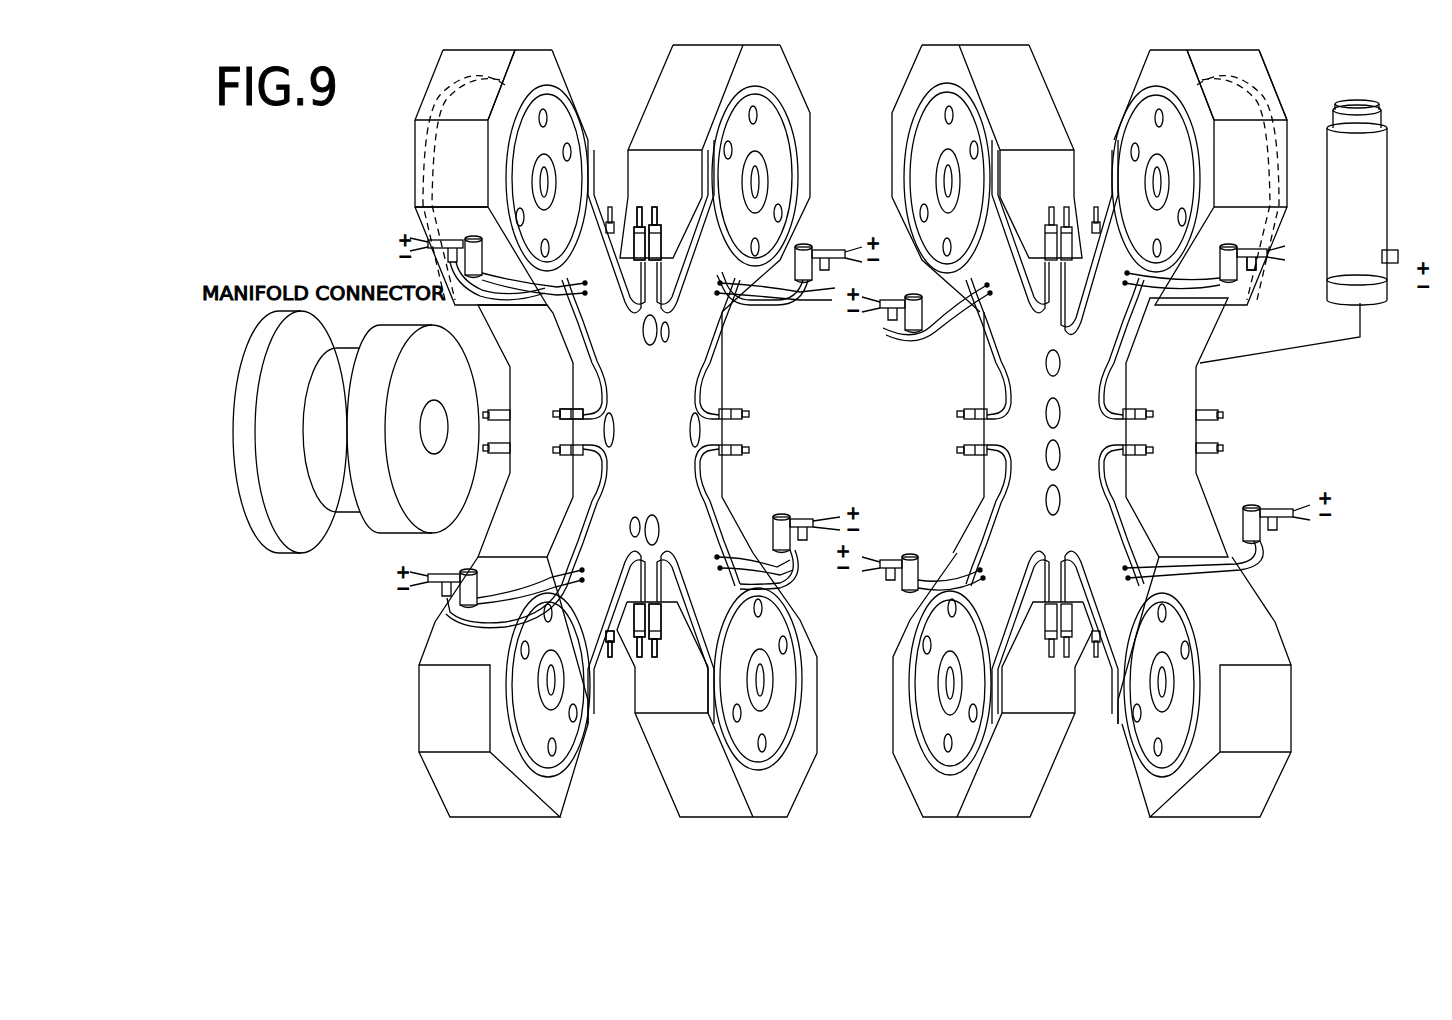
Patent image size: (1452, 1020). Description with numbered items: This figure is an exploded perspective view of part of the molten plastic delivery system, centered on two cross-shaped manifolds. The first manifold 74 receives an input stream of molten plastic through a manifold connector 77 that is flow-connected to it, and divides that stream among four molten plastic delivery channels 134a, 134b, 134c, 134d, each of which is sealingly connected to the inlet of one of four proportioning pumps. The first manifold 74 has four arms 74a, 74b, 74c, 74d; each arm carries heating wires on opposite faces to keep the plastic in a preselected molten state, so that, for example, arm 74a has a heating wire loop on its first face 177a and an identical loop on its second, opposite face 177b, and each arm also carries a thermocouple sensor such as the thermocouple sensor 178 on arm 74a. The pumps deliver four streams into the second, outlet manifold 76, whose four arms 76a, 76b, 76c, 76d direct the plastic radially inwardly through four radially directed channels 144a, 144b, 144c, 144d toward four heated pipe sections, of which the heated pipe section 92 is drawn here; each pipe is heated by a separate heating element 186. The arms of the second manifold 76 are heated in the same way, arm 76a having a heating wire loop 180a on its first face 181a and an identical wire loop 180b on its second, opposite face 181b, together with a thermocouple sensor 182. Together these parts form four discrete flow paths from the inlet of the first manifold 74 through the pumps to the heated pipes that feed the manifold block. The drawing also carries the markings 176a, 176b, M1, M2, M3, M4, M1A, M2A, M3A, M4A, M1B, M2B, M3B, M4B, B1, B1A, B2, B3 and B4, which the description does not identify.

The first manifold 74 is at (694, 72).
The arm 74a is at (485, 158).
The arm 74b is at (477, 687).
The arm 74c is at (746, 166).
The arm 74d is at (749, 685).
The second manifold 76 is at (986, 72).
The arm 76a is at (1221, 158).
The arm 76b is at (1236, 687).
The arm 76c is at (997, 178).
The arm 76d is at (987, 688).
The manifold connector 77 is at (272, 532).
The heated pipe section 92 is at (1326, 231).
The molten plastic delivery channel 134a is at (544, 182).
The molten plastic delivery channel 134b is at (547, 687).
The molten plastic delivery channel 134c is at (755, 180).
The molten plastic delivery channel 134d is at (760, 683).
The radially directed channel 144a is at (1160, 187).
The radially directed channel 144b is at (1162, 680).
The radially directed channel 144c is at (947, 190).
The radially directed channel 144d is at (950, 687).
The passage 176a is at (540, 92).
The passage 176b is at (433, 102).
The first face 177a is at (527, 63).
The second face 177b is at (437, 67).
The thermocouple sensor 178 is at (488, 227).
The heating wire loop 180a is at (1140, 70).
The heating wire loop 180b is at (1233, 72).
The first face 181a is at (1173, 63).
The second face 181b is at (1278, 87).
The thermocouple sensor 182 is at (1230, 263).
The heating element 186 is at (1387, 270).
The motor connector pin M1 is at (848, 188).
The motor connector pin M2 is at (856, 675).
The motor connector pin M3 is at (854, 175).
The motor connector pin M4 is at (841, 652).
The motor connector M1A is at (498, 315).
The motor connector M2A is at (835, 535).
The motor connector M3A is at (789, 319).
The motor connector M4A is at (838, 503).
The motor connector M1B is at (1211, 310).
The motor connector M2B is at (1216, 532).
The motor connector M3B is at (927, 344).
The motor connector M4B is at (923, 560).
The battery B1 is at (1408, 236).
The battery terminal B1A is at (1399, 257).
The port B2 is at (1071, 413).
The port B3 is at (1069, 455).
The port B4 is at (1069, 500).